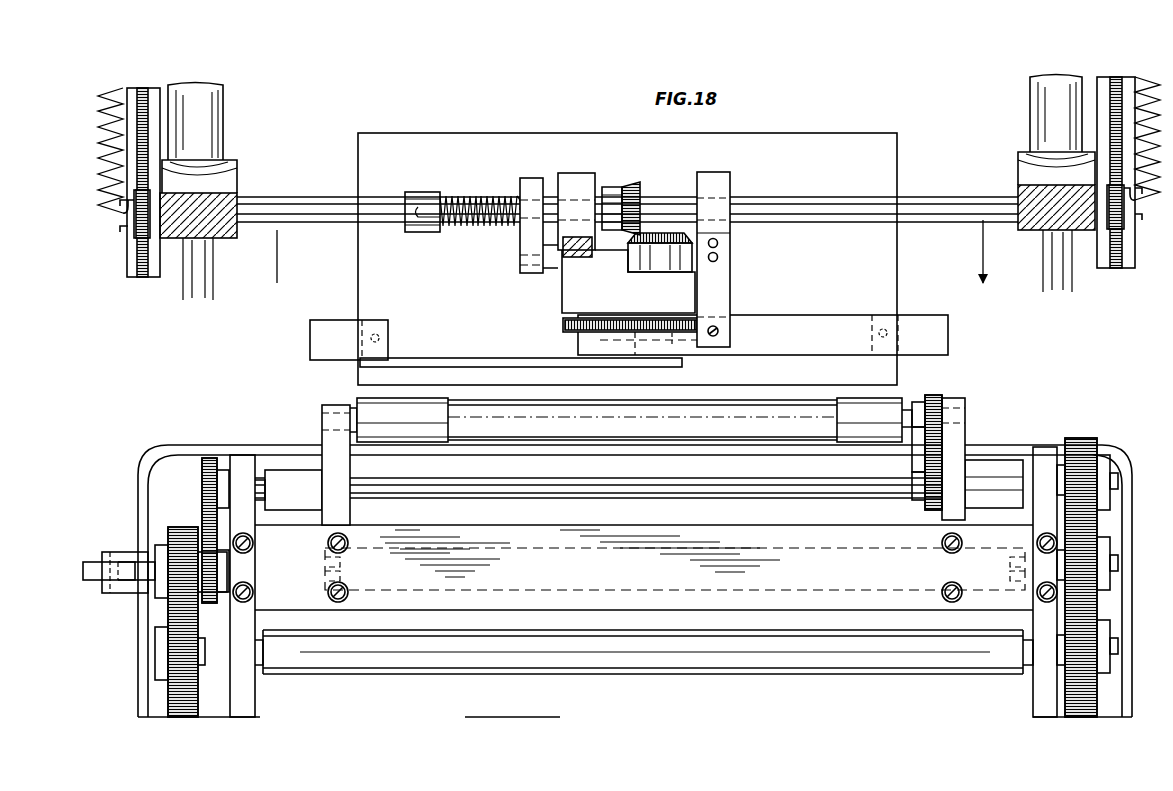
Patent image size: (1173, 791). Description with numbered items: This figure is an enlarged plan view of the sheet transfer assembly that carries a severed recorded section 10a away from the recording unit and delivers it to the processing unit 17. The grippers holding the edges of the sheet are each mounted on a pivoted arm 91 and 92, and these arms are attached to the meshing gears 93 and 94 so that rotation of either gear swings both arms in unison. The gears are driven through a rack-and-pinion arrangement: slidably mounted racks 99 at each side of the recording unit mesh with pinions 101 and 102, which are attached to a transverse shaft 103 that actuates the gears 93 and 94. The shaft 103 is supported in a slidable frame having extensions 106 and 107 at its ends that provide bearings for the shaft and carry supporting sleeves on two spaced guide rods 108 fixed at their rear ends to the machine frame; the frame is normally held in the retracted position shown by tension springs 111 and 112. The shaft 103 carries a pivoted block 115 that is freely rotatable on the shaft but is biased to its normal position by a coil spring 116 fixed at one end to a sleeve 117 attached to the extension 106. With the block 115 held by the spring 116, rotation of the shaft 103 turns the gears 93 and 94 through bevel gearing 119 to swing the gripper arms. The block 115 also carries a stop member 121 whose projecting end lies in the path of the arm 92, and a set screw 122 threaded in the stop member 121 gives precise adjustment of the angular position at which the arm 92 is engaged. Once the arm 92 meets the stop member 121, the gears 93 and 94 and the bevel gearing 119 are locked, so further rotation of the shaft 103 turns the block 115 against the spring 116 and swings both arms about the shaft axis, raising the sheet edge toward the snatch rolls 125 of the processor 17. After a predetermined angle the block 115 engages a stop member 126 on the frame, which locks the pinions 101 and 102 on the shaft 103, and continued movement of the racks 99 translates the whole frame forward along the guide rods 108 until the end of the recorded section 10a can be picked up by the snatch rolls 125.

The recorded section 10a is at (890, 248).
The processing unit 17 is at (226, 439).
The pivoted arm 91 is at (496, 343).
The pivoted arm 92 is at (920, 325).
The gear 93 is at (563, 327).
The gear 94 is at (675, 333).
The rack 99 is at (140, 262).
The pinion 101 is at (140, 237).
The pinion 102 is at (1110, 232).
The transverse shaft 103 is at (792, 205).
The extension 106 is at (235, 178).
The extension 107 is at (1018, 178).
The guide rod 108 is at (190, 285).
The tension spring 111 is at (115, 205).
The tension spring 112 is at (1146, 202).
The pivoted block 115 is at (577, 178).
The coil spring 116 is at (470, 228).
The sleeve 117 is at (415, 192).
The bevel gearing 119 is at (658, 233).
The stop member 121 is at (725, 290).
The set screw 122 is at (720, 333).
The snatch rolls 125 is at (385, 410).
The stop member 126 is at (585, 257).